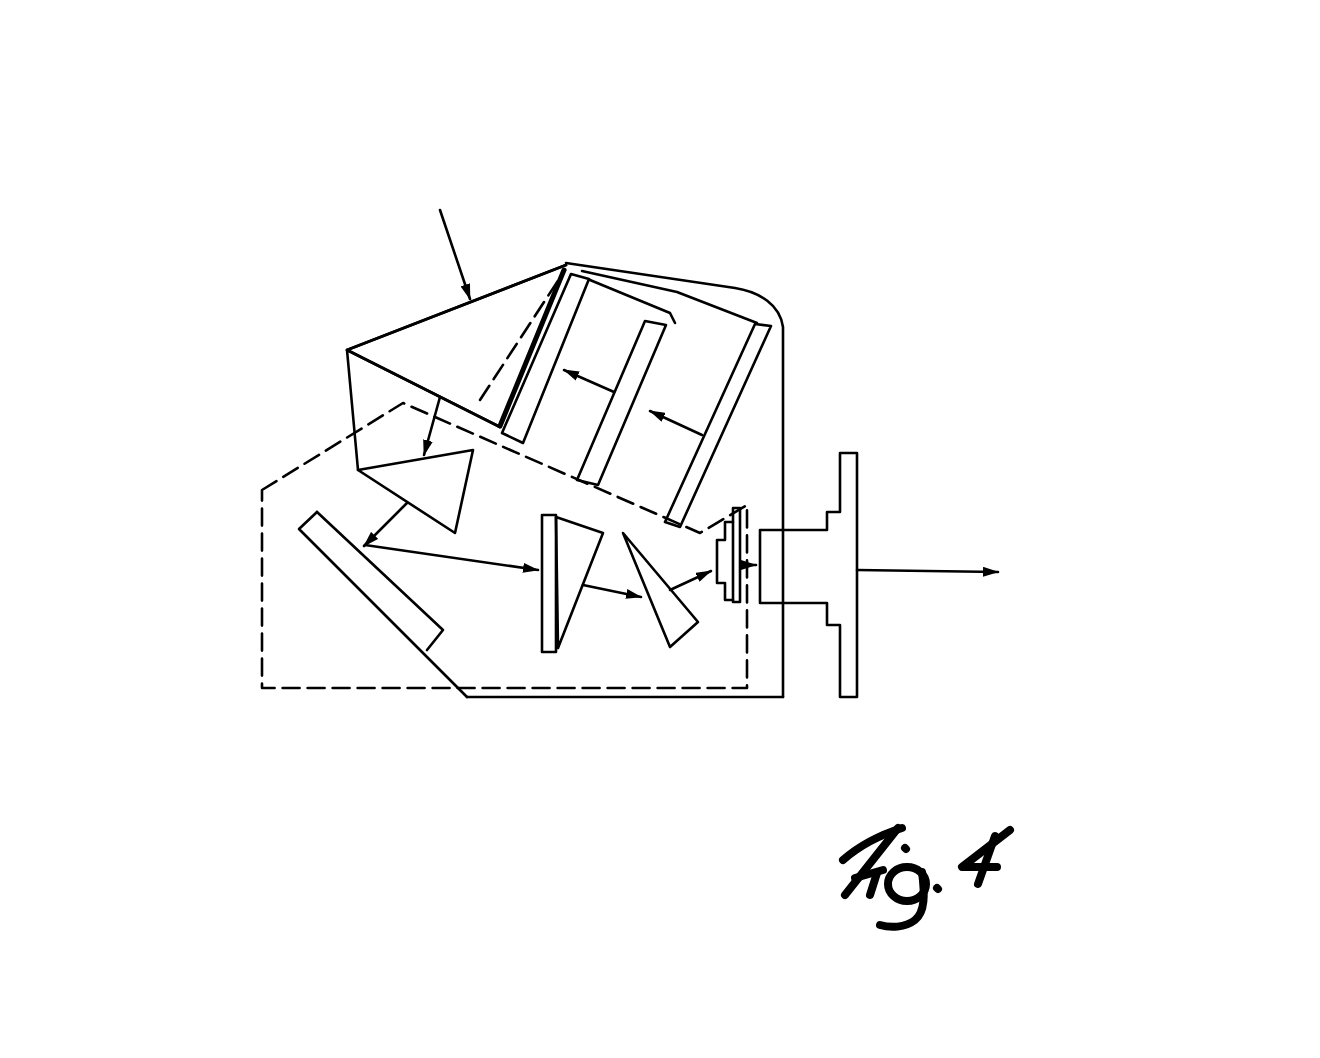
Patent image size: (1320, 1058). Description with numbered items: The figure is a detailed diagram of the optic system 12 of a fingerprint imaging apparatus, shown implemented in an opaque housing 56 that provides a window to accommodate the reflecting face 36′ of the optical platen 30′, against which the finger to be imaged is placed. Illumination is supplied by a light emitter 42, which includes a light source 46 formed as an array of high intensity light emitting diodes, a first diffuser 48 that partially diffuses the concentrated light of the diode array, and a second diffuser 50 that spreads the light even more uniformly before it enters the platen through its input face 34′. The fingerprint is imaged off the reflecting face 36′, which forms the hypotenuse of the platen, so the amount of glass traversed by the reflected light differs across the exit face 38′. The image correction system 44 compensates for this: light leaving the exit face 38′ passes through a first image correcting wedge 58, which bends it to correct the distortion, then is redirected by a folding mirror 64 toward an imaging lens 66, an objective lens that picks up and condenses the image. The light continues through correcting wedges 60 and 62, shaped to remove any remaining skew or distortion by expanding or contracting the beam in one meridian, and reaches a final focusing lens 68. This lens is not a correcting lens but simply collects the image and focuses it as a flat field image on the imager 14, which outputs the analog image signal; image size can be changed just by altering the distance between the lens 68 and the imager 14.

The optic system 12 is at (778, 117).
The imager 14 is at (843, 592).
The optical platen 30′ is at (405, 339).
The input face 34′ is at (537, 316).
The reflecting face 36′ is at (422, 322).
The exit face 38′ is at (403, 371).
The light emitter 42 is at (749, 276).
The image correction system 44 is at (368, 690).
The light source 46 is at (747, 389).
The first diffuser 48 is at (650, 333).
The second diffuser 50 is at (567, 312).
The housing 56 is at (660, 697).
The image correcting wedge 58 is at (400, 473).
The image correcting wedge 60 is at (567, 598).
The image correcting wedge 62 is at (690, 627).
The folding mirror 64 is at (343, 555).
The imaging lens 66 is at (541, 631).
The final focusing lens 68 is at (728, 518).